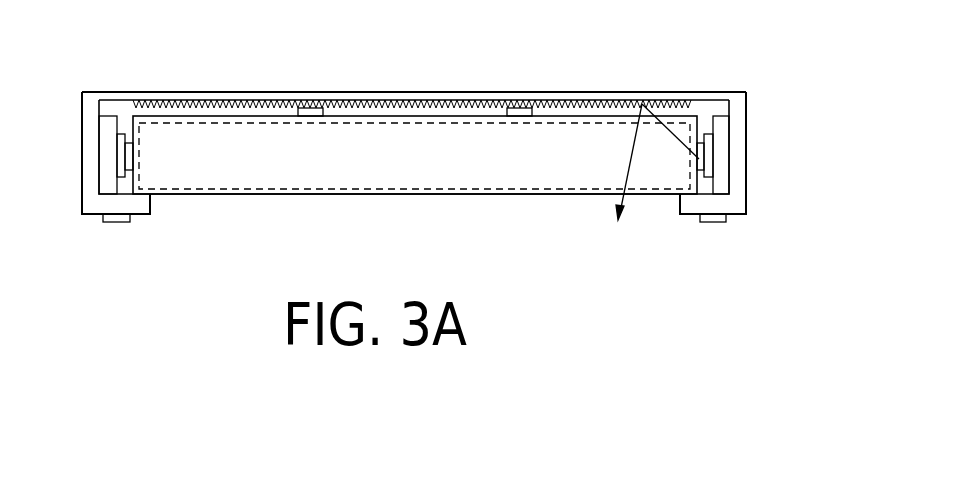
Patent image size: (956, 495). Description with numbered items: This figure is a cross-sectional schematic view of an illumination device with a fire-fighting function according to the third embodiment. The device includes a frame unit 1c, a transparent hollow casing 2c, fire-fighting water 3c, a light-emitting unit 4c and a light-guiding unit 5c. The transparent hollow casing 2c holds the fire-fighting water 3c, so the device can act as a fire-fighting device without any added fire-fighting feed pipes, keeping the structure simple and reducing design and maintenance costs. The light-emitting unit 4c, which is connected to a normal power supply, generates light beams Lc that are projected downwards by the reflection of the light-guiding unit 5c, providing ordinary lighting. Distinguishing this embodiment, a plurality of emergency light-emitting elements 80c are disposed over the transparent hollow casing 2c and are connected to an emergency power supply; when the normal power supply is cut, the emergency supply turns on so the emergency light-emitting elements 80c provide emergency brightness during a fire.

The frame unit 1c is at (745, 92).
The transparent hollow casing 2c is at (567, 92).
The fire-fighting water 3c is at (189, 148).
The light-emitting unit 4c is at (703, 158).
The light-guiding unit 5c is at (482, 101).
The emergency light-emitting elements 80c is at (313, 107).
The light beams Lc is at (672, 127).